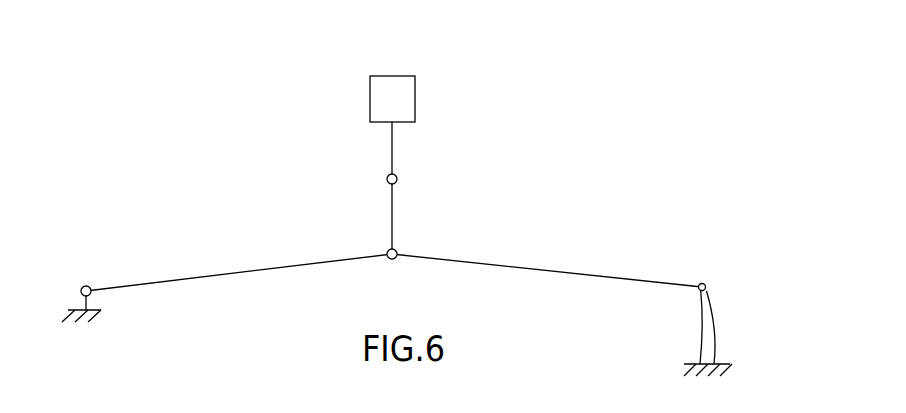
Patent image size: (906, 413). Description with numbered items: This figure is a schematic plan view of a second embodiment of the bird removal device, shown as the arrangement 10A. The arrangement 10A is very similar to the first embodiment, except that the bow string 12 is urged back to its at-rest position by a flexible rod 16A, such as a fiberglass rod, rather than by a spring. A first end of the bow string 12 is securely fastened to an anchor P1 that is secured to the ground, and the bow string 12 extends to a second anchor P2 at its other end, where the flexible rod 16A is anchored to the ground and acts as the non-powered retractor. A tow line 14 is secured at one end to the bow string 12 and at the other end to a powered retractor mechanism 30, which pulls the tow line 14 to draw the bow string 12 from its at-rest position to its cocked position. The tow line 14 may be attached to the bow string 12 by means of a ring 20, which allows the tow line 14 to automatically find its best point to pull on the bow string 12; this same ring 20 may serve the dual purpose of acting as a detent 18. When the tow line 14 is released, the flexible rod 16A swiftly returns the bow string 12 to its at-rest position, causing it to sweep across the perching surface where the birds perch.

The arrangement 10A is at (199, 102).
The powered retractor mechanism 30 is at (403, 88).
The tow line 14 is at (392, 152).
The detent 18 is at (397, 179).
The ring 20 is at (397, 250).
The bow string 12 is at (552, 270).
The anchor P1 is at (82, 289).
The second anchor P2 is at (706, 285).
The flexible rod 16A is at (713, 336).